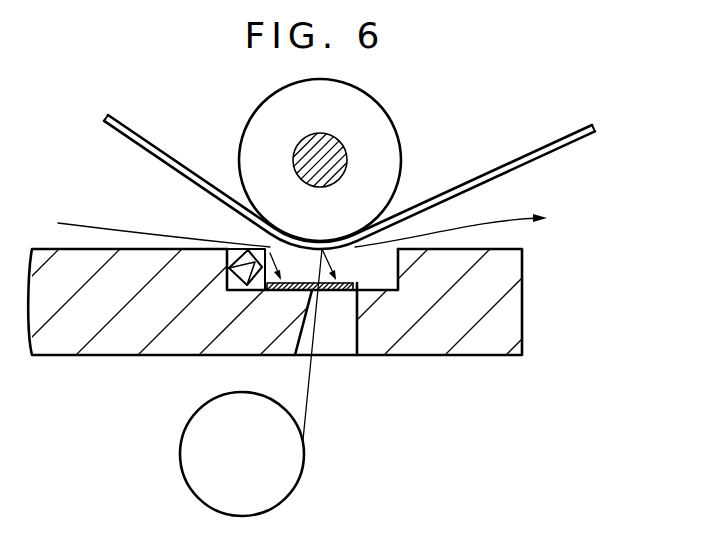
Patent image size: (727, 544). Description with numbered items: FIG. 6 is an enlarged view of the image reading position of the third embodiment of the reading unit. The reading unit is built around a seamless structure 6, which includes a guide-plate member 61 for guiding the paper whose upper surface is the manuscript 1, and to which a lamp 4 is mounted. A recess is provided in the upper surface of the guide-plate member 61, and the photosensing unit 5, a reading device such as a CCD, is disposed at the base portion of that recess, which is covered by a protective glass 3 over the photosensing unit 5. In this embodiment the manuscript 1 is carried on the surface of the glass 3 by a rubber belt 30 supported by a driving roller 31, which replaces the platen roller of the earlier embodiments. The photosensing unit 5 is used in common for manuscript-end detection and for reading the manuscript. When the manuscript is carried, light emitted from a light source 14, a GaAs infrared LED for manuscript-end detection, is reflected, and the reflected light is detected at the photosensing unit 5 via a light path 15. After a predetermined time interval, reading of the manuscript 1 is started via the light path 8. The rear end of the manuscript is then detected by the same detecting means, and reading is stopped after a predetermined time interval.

The manuscript 1 is at (500, 218).
The protective glass 3 is at (458, 333).
The lamp 4 is at (290, 468).
The photosensing unit 5 is at (346, 291).
The seamless structure 6 is at (112, 462).
The light path 8 is at (307, 403).
The light source 14 is at (227, 278).
The light path 15 is at (250, 249).
The rubber belt 30 is at (466, 178).
The driving roller 31 is at (360, 107).
The guide-plate member 61 is at (59, 337).